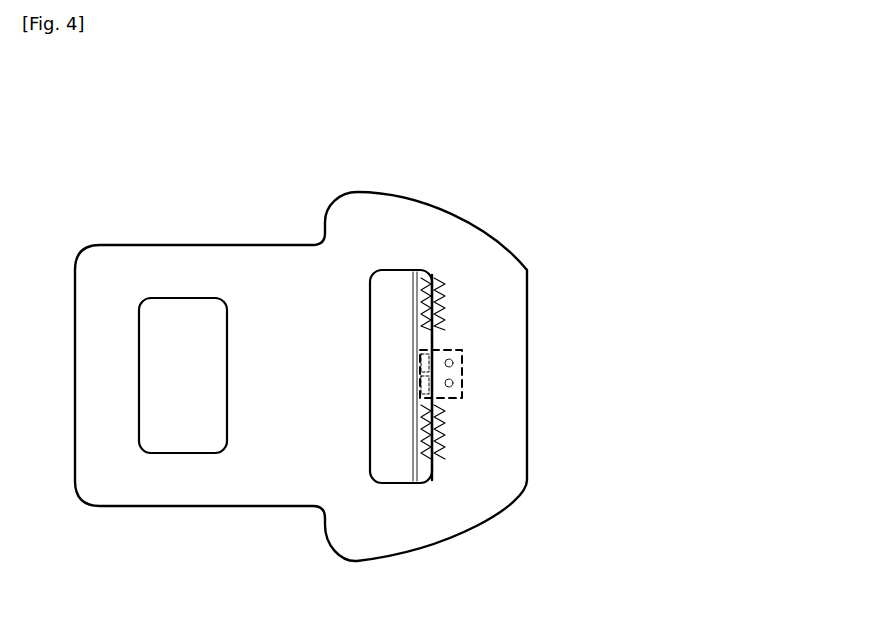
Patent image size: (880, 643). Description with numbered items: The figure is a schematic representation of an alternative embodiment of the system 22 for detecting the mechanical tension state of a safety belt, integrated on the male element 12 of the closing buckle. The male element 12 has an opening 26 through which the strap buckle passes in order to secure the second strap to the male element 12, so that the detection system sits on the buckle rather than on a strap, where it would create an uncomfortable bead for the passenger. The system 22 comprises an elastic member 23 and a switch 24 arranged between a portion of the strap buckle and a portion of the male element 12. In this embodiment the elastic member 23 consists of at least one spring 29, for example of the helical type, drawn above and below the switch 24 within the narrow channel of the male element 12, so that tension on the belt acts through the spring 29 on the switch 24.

The male element 12 is at (272, 300).
The system for detecting the mechanical tension state 22 is at (402, 302).
The elastic member 23 is at (436, 266).
The switch 24 is at (438, 358).
The opening 26 is at (388, 380).
The spring 29 is at (447, 298).